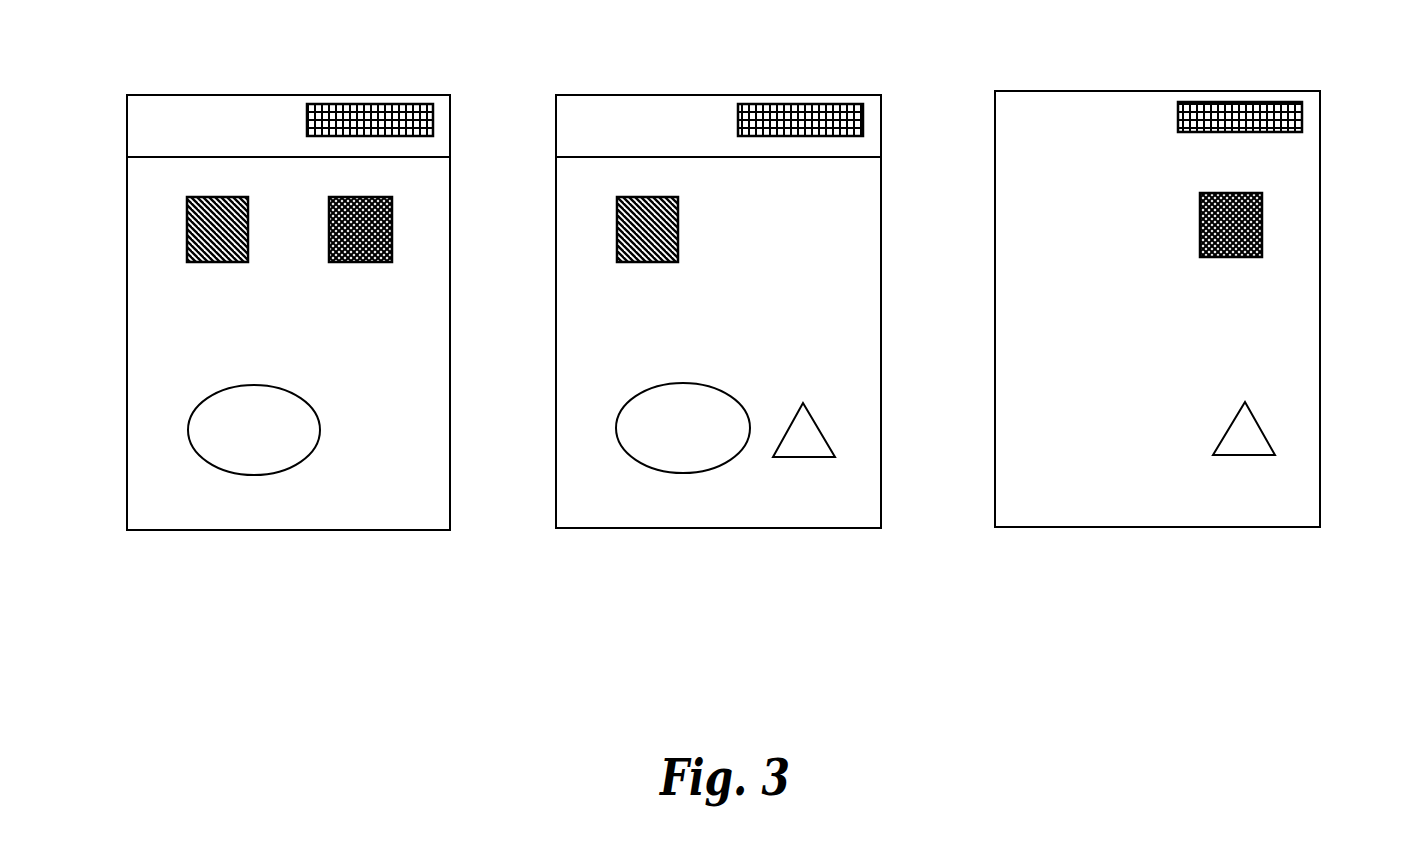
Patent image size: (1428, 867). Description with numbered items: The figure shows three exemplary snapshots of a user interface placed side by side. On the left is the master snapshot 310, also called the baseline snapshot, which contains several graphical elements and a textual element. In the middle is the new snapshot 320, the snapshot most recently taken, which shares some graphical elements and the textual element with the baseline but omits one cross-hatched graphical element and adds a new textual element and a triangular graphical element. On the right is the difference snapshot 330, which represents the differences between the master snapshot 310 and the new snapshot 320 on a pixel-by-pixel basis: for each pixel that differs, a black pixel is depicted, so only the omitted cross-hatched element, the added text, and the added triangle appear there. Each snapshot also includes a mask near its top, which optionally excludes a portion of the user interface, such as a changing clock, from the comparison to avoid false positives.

The master snapshot 310 is at (148, 93).
The new snapshot 320 is at (601, 93).
The difference snapshot 330 is at (1027, 89).